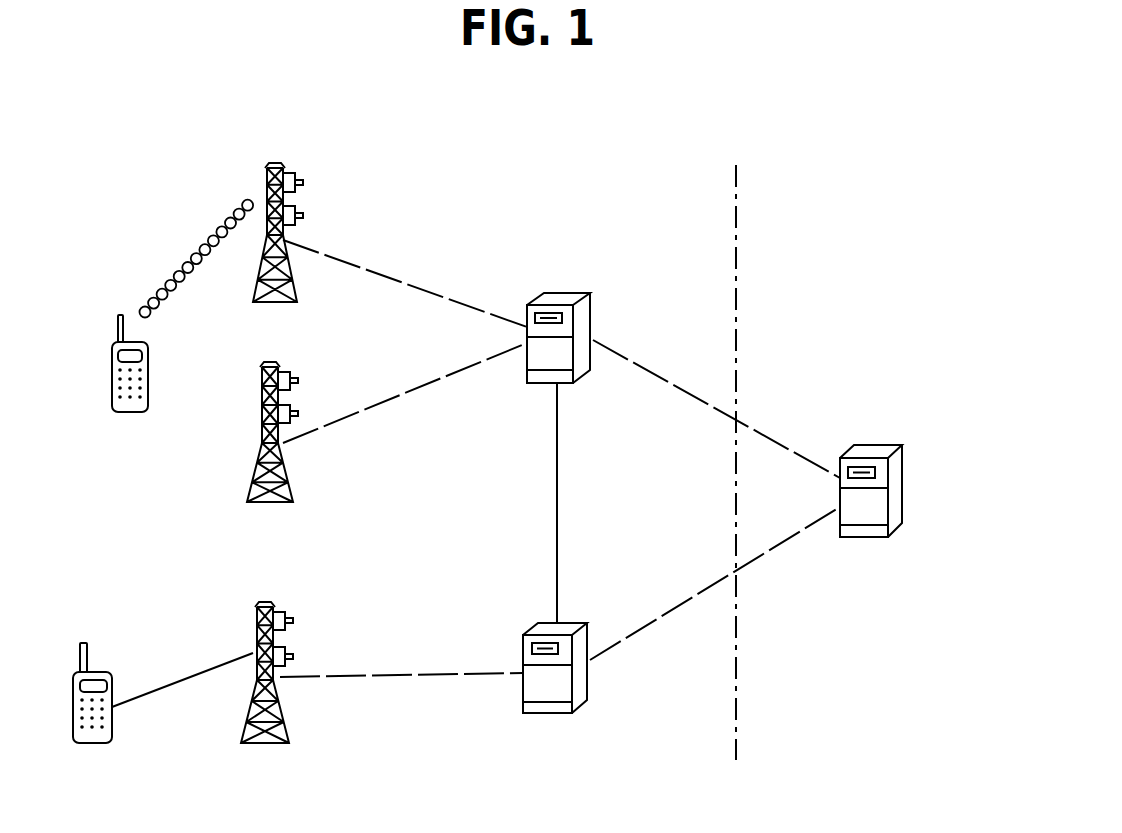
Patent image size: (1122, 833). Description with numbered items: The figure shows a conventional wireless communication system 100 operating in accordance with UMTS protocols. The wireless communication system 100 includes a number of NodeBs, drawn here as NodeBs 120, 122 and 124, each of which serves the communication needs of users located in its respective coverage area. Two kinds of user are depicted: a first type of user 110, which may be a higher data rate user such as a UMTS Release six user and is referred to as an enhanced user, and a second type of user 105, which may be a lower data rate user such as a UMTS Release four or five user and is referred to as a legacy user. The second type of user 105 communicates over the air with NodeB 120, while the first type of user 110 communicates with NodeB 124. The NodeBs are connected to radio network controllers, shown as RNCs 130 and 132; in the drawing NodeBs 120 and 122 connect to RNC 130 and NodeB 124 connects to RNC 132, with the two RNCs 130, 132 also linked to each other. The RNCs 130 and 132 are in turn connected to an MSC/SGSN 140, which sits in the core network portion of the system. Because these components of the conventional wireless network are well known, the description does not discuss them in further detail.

The wireless communication system 100 is at (523, 178).
The second type of user 105 is at (148, 364).
The first type of user 110 is at (100, 670).
The NodeB 120 is at (306, 166).
The NodeB 122 is at (313, 376).
The NodeB 124 is at (298, 606).
The RNC 130 is at (592, 310).
The RNC 132 is at (568, 622).
The MSC/SGSN 140 is at (875, 445).